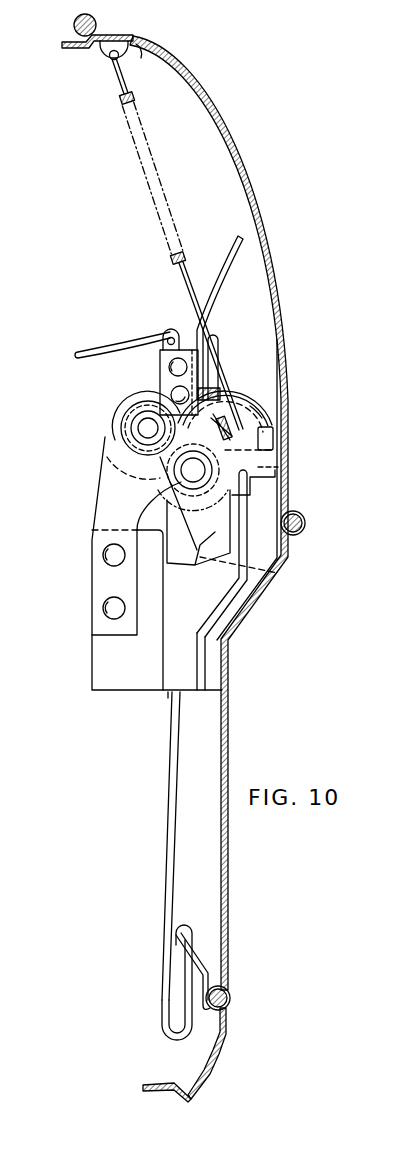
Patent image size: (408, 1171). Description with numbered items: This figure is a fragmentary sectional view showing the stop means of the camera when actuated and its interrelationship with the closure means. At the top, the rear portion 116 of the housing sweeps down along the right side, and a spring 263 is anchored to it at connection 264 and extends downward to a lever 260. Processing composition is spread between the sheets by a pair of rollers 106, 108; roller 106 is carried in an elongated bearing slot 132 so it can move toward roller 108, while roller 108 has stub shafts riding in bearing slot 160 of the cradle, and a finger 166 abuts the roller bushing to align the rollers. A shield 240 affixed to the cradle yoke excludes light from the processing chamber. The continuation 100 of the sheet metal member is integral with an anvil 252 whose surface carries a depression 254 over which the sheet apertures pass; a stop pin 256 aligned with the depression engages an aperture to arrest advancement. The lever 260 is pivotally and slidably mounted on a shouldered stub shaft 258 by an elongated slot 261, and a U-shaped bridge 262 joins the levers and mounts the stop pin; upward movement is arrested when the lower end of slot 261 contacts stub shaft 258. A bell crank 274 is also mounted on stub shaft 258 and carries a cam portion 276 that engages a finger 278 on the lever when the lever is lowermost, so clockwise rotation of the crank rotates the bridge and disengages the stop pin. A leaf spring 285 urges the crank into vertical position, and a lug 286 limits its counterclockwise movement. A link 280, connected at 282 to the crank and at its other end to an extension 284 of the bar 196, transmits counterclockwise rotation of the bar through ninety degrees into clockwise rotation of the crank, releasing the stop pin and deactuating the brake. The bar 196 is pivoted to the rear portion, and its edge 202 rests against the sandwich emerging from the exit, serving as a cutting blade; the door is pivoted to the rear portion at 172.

The continuation 100 is at (100, 352).
The roller 106 is at (122, 396).
The roller 108 is at (255, 400).
The rear portion 116 is at (231, 122).
The bearing slot 132 is at (120, 428).
The bearing slot 160 is at (262, 418).
The finger 166 is at (275, 451).
The pivot 172 is at (305, 523).
The bar 196 is at (203, 1080).
The edge 202 is at (142, 1088).
The shield 240 is at (250, 386).
The anvil 252 is at (180, 330).
The depression 254 is at (167, 328).
The stop pin 256 is at (158, 361).
The stub shaft 258 is at (181, 472).
The lever 260 is at (167, 495).
The elongated slot 261 is at (284, 574).
The U-shaped bridge 262 is at (220, 352).
The spring 263 is at (112, 104).
The spring connection 264 is at (102, 61).
The bell crank 274 is at (250, 497).
The cam portion 276 is at (213, 553).
The finger 278 is at (175, 553).
The link 280 is at (197, 632).
The link connection 282 is at (275, 477).
The extension 284 is at (196, 962).
The leaf spring 285 is at (103, 517).
The lug 286 is at (273, 438).